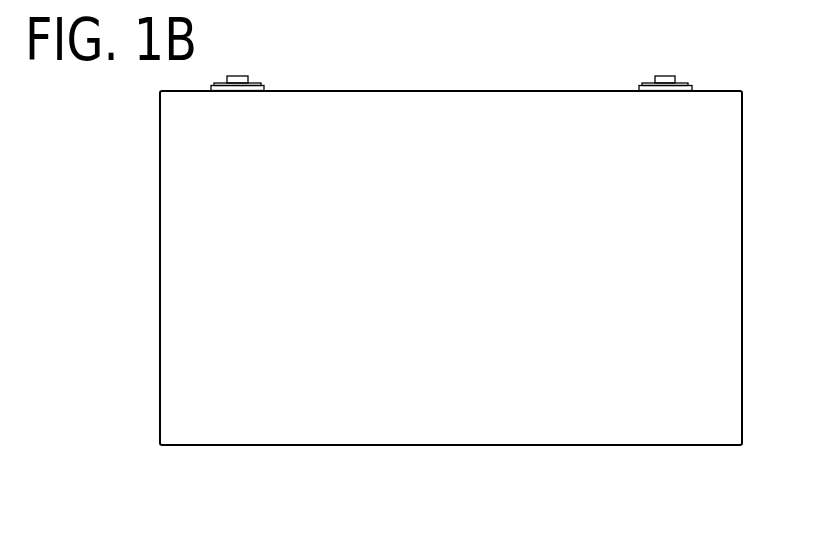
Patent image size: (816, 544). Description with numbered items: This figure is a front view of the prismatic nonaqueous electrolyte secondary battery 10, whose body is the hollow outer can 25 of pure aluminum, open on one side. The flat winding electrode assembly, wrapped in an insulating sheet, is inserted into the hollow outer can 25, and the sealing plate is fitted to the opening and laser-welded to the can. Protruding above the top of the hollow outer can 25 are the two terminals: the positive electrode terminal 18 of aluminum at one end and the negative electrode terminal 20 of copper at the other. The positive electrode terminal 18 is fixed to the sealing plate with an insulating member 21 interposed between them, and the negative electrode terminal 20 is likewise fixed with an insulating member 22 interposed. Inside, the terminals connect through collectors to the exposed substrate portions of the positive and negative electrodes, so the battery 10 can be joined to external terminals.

The prismatic nonaqueous electrolyte secondary battery 10 is at (128, 96).
The positive electrode terminal 18 is at (659, 79).
The negative electrode terminal 20 is at (229, 79).
The insulating member 21 is at (682, 85).
The insulating member 22 is at (255, 85).
The hollow outer can 25 is at (205, 230).